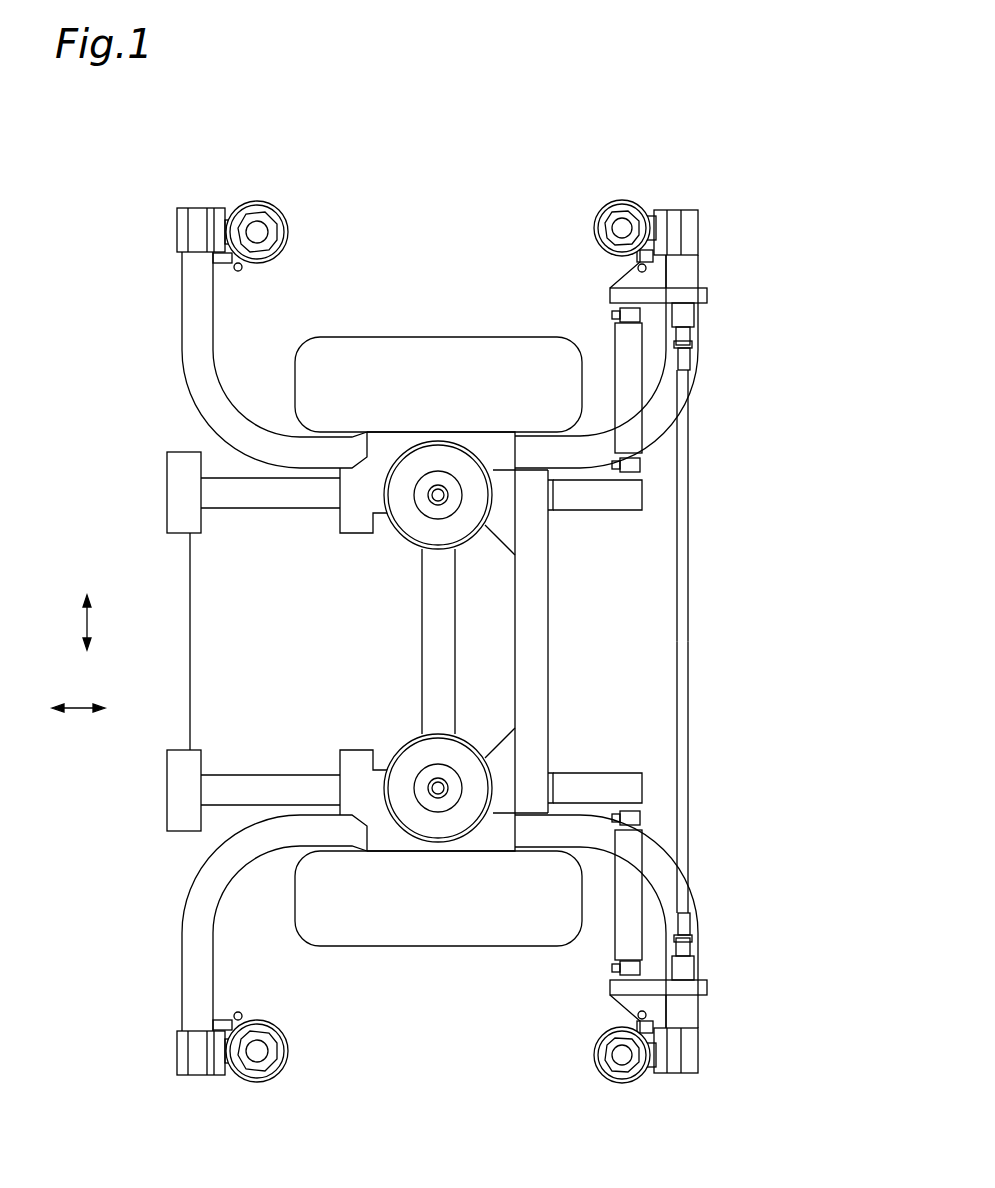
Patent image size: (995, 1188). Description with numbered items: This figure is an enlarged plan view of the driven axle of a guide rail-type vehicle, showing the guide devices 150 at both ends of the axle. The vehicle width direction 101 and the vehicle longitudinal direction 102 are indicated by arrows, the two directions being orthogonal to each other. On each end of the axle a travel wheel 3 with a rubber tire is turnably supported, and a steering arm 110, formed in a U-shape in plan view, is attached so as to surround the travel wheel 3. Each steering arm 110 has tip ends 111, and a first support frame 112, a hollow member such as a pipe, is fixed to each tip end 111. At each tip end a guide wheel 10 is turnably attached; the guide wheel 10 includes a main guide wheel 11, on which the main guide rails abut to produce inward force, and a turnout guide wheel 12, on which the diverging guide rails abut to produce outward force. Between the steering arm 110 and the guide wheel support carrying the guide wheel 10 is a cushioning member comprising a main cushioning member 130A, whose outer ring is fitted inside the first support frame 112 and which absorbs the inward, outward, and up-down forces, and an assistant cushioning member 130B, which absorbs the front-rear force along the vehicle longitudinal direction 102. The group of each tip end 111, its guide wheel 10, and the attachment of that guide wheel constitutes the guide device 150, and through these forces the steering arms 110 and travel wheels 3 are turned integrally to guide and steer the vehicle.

The guide device 150 is at (707, 173).
The guide wheel 10 is at (585, 220).
The main guide wheel 11 is at (625, 641).
The turnout guide wheel 12 is at (625, 641).
The travel wheel 3 is at (330, 337).
The steering arm 110 is at (434, 641).
The tip end 111 is at (187, 272).
The first support frame 112 is at (195, 220).
The main cushioning member 130A is at (222, 203).
The assistant cushioning member 130B is at (227, 260).
The vehicle width direction 101 is at (85, 628).
The vehicle longitudinal direction 102 is at (80, 712).